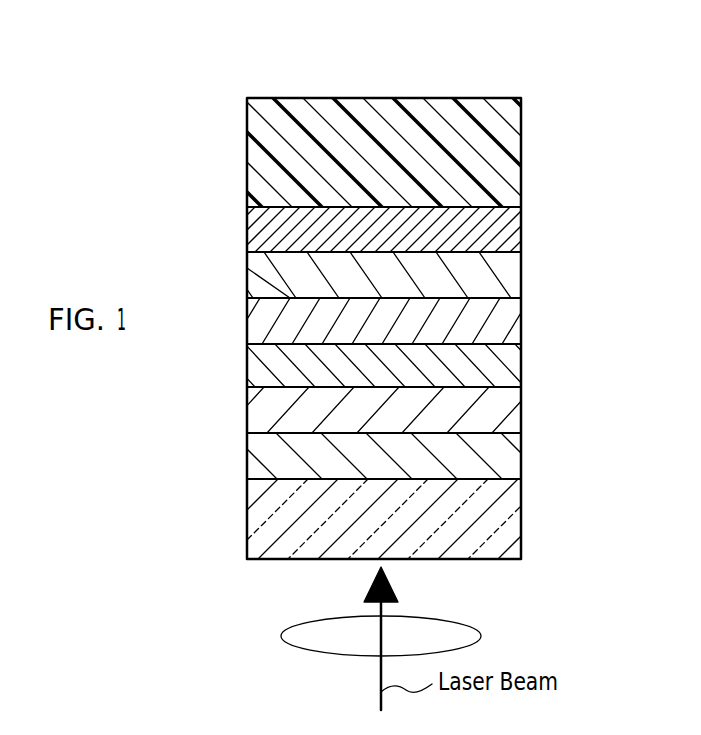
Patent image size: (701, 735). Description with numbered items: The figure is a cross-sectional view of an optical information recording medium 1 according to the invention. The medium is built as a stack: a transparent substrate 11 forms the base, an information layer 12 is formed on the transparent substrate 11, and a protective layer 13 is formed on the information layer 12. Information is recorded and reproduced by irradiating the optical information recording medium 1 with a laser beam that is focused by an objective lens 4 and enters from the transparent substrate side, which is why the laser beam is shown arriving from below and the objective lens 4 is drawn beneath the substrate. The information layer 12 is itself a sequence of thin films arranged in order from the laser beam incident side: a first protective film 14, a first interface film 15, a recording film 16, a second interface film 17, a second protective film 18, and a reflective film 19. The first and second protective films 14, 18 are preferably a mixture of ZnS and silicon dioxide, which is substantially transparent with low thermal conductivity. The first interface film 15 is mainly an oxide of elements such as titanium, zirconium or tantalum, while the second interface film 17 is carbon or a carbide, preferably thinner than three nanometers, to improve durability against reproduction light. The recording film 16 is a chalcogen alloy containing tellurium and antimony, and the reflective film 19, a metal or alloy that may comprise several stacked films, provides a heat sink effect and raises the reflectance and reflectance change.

The optical information recording medium 1 is at (504, 85).
The objective lens 4 is at (481, 636).
The transparent substrate 11 is at (521, 517).
The information layer 12 is at (588, 208).
The protective layer 13 is at (521, 157).
The first protective film 14 is at (521, 455).
The first interface film 15 is at (521, 410).
The recording film 16 is at (521, 365).
The second interface film 17 is at (521, 323).
The second protective film 18 is at (521, 277).
The reflective film 19 is at (521, 228).